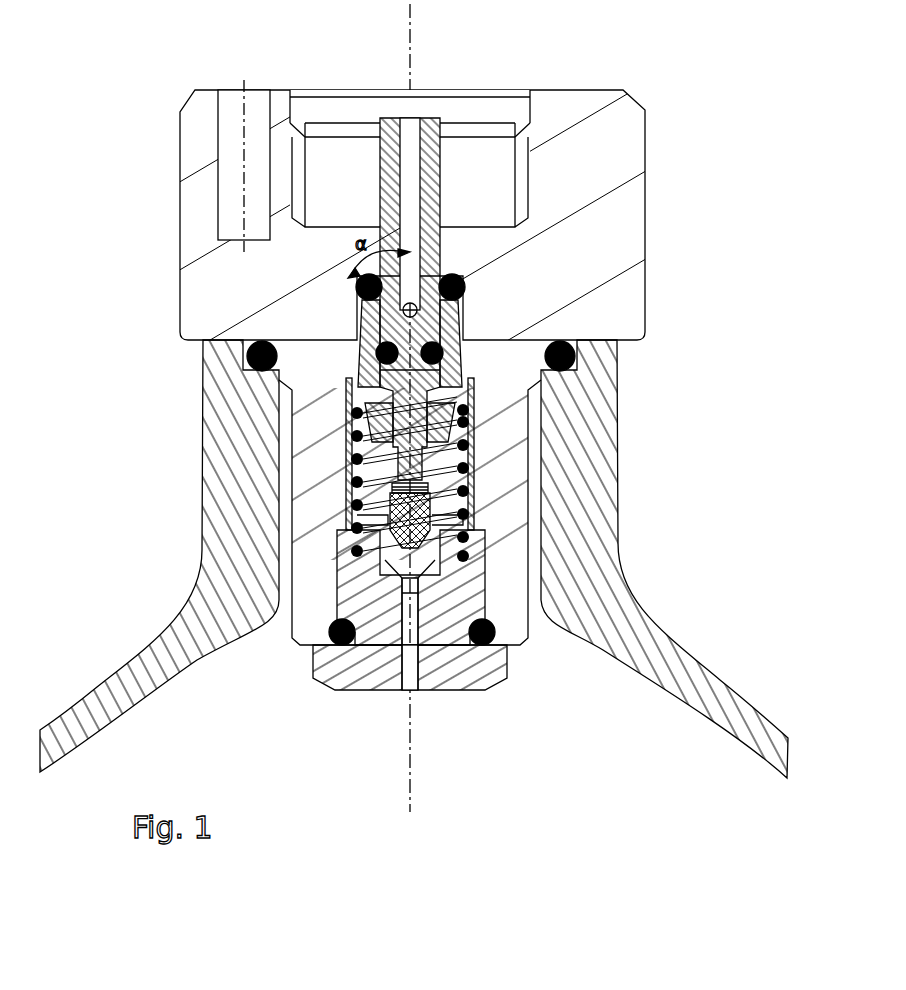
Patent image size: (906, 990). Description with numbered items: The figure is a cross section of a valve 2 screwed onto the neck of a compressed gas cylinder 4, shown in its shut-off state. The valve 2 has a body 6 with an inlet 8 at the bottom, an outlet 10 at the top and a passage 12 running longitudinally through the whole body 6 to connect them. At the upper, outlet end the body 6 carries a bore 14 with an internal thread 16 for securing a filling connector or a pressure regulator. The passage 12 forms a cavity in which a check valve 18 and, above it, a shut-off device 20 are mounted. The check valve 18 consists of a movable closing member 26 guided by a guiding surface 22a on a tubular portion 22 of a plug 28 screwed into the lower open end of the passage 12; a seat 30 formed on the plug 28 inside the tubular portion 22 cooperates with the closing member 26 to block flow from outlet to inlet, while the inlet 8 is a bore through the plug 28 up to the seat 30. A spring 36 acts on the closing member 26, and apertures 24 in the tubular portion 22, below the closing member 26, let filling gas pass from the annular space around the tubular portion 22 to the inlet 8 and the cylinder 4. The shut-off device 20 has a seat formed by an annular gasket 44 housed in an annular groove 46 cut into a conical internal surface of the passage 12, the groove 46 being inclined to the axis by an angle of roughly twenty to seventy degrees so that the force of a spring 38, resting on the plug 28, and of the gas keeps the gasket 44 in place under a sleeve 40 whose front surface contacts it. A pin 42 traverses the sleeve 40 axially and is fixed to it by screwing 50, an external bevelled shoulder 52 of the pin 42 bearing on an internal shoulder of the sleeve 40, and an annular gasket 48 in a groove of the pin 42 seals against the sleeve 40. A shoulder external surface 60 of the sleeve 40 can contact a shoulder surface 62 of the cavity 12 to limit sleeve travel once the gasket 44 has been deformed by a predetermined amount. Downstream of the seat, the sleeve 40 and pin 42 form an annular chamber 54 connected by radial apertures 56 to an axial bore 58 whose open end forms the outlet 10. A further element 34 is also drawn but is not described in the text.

The valve 2 is at (85, 115).
The compressed gas cylinder 4 is at (684, 670).
The body 6 is at (627, 298).
The inlet 8 is at (414, 685).
The outlet 10 is at (413, 125).
The passage 12 is at (465, 505).
The bore 14 is at (478, 145).
The internal thread 16 is at (297, 145).
The check valve 18 is at (196, 497).
The shut-off device 20 is at (183, 285).
The tubular portion 22 is at (462, 538).
The guiding surface 22a is at (400, 548).
The apertures 24 is at (455, 558).
The movable closing member 26 is at (357, 508).
The plug 28 is at (468, 688).
The seat 30 is at (385, 565).
The sealing ring 34 is at (580, 358).
The spring 36 is at (462, 478).
The spring 38 is at (455, 440).
The sleeve 40 is at (447, 353).
The pin 42 is at (452, 285).
The annular gasket 44 is at (372, 285).
The annular groove 46 is at (466, 287).
The annular gasket 48 is at (445, 360).
The screwing 50 is at (385, 425).
The external bevelled shoulder 52 is at (378, 385).
The annular chamber 54 is at (458, 316).
The apertures 56 is at (403, 310).
The axial bore 58 is at (410, 188).
The shoulder external surface 60 is at (347, 382).
The shoulder surface 62 is at (280, 382).